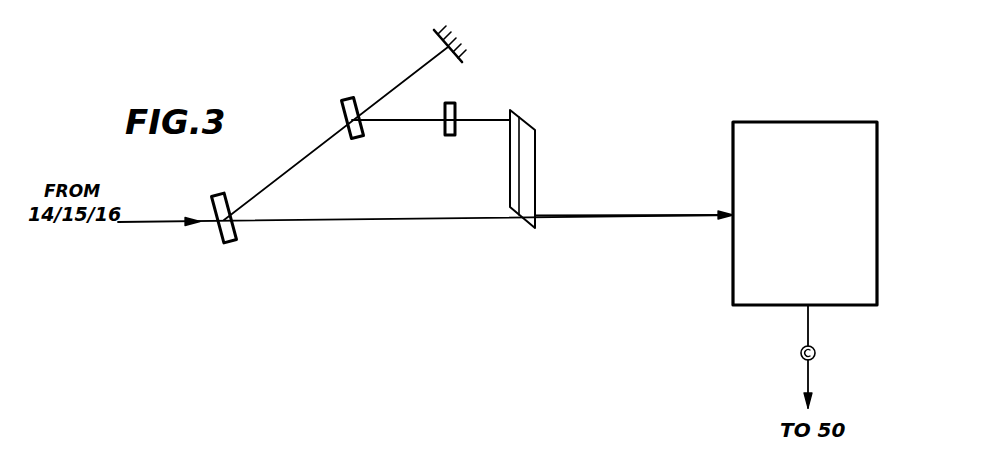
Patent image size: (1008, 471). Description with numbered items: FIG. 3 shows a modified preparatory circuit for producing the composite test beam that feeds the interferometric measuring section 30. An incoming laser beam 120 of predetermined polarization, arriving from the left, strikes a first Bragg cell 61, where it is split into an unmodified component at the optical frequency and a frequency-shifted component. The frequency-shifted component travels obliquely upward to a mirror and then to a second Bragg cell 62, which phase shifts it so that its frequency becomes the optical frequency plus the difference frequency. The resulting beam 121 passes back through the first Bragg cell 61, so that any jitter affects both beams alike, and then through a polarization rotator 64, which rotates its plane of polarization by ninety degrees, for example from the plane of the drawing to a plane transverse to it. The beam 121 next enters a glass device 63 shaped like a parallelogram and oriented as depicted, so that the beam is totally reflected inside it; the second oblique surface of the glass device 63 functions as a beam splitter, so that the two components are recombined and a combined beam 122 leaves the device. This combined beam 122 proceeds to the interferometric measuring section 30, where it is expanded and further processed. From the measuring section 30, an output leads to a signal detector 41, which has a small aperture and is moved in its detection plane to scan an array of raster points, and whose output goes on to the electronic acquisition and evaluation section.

The incoming laser beam 120 is at (118, 222).
The first Bragg cell 61 is at (222, 244).
The second Bragg cell 62 is at (355, 139).
The polarization rotator 64 is at (448, 136).
The beam 121 is at (478, 119).
The glass device 63 is at (525, 156).
The combined beam 122 is at (637, 215).
The interferometric measuring section 30 is at (835, 133).
The signal detector 41 is at (800, 352).